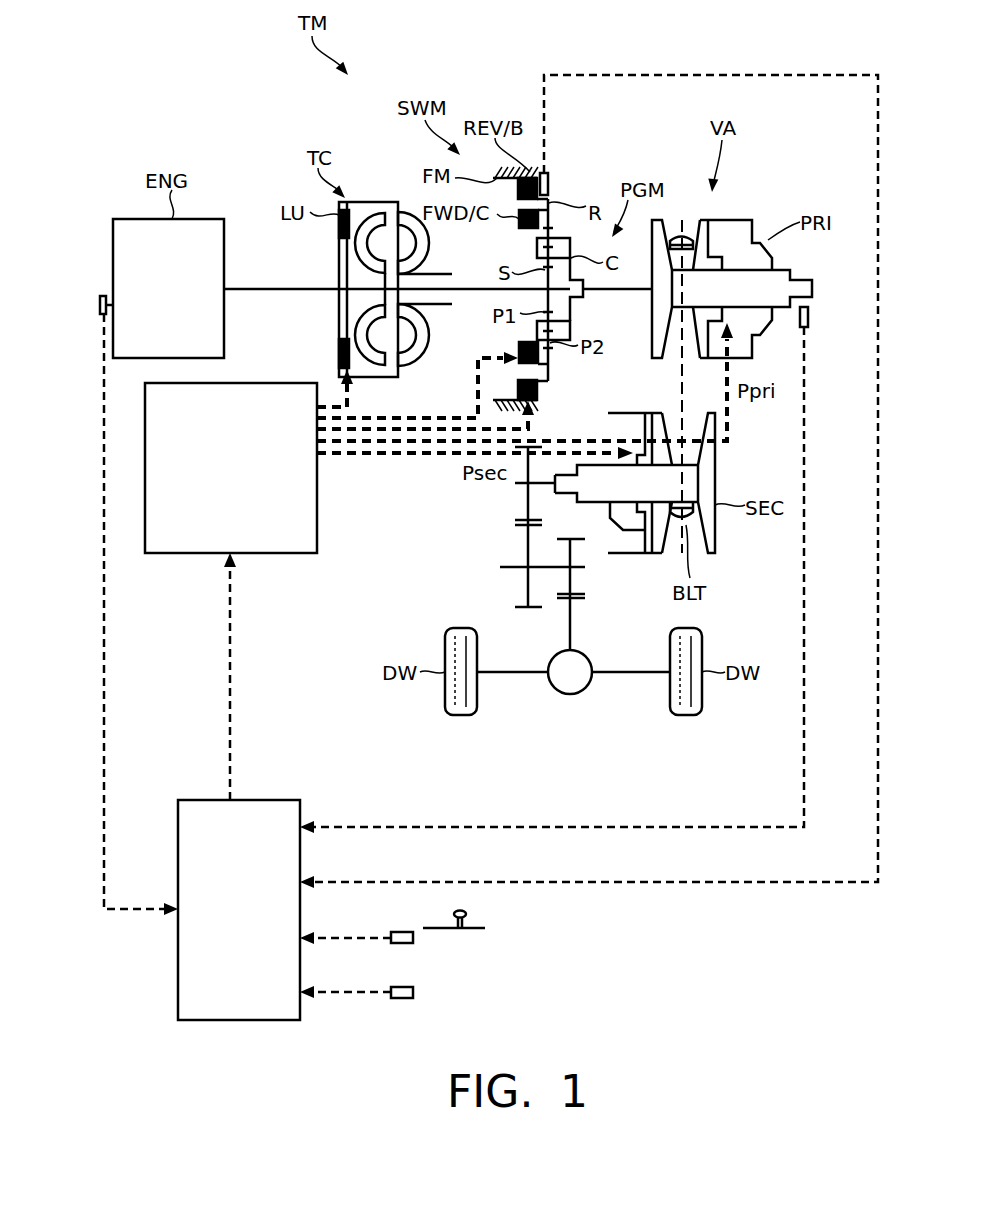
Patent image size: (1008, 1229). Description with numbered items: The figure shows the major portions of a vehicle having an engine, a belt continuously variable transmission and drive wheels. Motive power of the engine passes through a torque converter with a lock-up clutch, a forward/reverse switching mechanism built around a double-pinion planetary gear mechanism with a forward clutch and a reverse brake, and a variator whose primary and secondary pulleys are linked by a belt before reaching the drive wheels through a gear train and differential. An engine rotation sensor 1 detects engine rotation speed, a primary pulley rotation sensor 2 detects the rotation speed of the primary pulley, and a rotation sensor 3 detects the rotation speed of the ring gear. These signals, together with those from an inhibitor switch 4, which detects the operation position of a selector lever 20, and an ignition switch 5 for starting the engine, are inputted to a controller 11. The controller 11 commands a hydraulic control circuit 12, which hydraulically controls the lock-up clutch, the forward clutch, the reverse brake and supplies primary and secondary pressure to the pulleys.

The engine rotation sensor 1 is at (100, 305).
The PRI rotation sensor 2 is at (808, 317).
The rotation sensor 3 is at (548, 183).
The inhibitor switch 4 is at (401, 932).
The ignition switch 5 is at (413, 992).
The controller 11 is at (212, 800).
The hydraulic control circuit 12 is at (175, 553).
The selector lever 20 is at (466, 913).